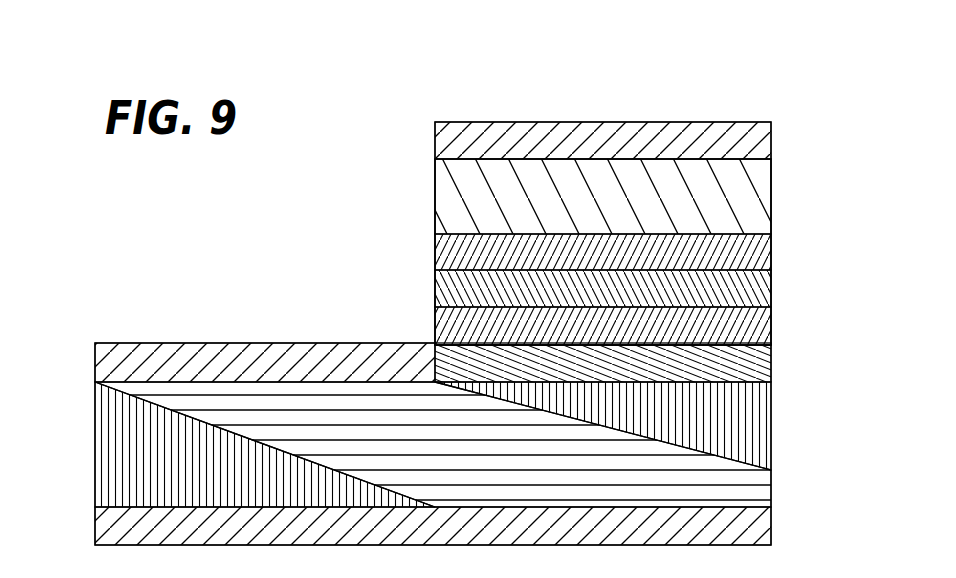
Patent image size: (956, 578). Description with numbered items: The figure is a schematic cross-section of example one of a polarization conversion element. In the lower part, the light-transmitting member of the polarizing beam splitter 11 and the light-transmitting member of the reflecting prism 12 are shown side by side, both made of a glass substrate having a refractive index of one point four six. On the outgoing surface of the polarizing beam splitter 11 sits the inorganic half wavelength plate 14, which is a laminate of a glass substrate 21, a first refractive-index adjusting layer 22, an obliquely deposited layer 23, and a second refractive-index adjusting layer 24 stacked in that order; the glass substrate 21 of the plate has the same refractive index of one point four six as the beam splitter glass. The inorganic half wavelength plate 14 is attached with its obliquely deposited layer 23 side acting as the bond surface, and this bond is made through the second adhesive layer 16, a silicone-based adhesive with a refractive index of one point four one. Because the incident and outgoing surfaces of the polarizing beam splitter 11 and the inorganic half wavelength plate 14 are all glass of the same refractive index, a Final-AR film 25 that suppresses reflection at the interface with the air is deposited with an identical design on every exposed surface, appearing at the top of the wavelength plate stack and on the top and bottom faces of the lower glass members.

The Final-AR film 25 is at (760, 143).
The glass substrate 21 is at (760, 207).
The first refractive-index adjusting layer 22 is at (760, 256).
The obliquely deposited layer 23 is at (760, 293).
The second refractive-index adjusting layer 24 is at (760, 333).
The inorganic ½ wavelength plate 14 is at (821, 162).
The second adhesive layer 16 is at (758, 373).
The reflecting prism 12 is at (758, 437).
The polarizing beam splitter 11 is at (760, 494).